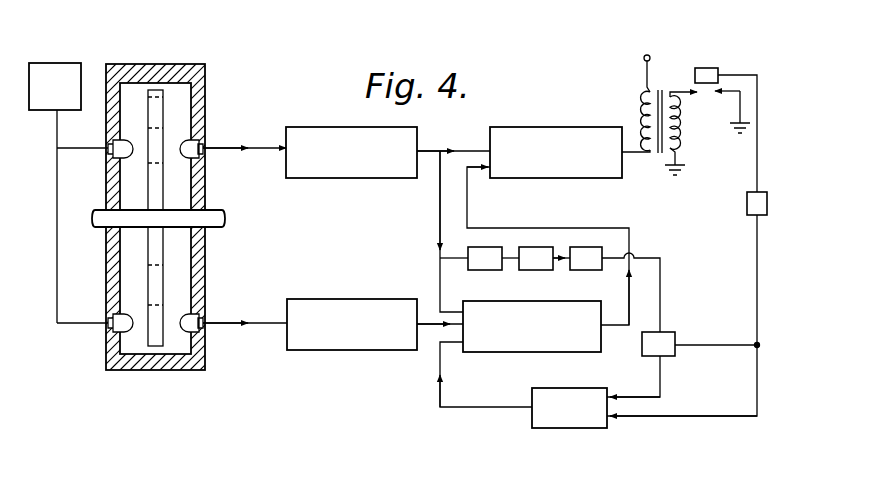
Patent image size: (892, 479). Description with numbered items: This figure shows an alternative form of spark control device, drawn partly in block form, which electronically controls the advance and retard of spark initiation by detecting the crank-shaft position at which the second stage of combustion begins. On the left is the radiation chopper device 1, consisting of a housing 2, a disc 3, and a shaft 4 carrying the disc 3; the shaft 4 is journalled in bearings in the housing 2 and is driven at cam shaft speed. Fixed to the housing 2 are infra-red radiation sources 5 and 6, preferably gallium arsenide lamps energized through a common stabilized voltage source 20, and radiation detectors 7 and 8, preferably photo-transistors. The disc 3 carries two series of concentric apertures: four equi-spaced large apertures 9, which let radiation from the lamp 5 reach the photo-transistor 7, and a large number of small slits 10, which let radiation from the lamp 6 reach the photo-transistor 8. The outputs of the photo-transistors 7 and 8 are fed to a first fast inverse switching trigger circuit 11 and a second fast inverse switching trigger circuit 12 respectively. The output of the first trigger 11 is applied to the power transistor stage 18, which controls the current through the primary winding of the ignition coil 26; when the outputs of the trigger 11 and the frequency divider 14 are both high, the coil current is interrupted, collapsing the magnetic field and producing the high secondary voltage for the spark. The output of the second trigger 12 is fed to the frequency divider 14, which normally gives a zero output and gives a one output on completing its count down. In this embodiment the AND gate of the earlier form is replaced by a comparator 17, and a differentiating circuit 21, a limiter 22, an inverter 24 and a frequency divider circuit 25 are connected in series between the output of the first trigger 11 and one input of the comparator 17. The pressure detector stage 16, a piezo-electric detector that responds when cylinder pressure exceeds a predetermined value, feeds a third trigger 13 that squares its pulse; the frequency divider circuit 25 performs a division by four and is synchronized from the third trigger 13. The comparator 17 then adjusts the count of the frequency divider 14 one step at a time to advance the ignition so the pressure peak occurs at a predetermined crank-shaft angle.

The radiation chopper device 1 is at (205, 63).
The housing 2 is at (205, 100).
The disc 3 is at (163, 113).
The shaft 4 is at (216, 228).
The infra-red radiation source 5 is at (120, 150).
The infra-red radiation source 6 is at (118, 328).
The radiation detector 7 is at (197, 155).
The radiation detector 8 is at (193, 326).
The large apertures 9 is at (157, 278).
The small apertures or slits 10 is at (153, 320).
The first fast inverse switching trigger circuit 11 is at (351, 152).
The second fast inverse switching trigger circuit 12 is at (352, 324).
The third trigger 13 is at (747, 201).
The frequency divider 14 is at (532, 326).
The pressure detector stage 16 is at (707, 68).
The comparator 17 is at (569, 408).
The power transistor stage 18 is at (556, 152).
The stabilized voltage source 20 is at (68, 193).
The differentiating circuit 21 is at (488, 247).
The limiter 22 is at (535, 247).
The inverter 24 is at (586, 247).
The frequency divider circuit 25 is at (664, 344).
The ignition coil 26 is at (645, 103).